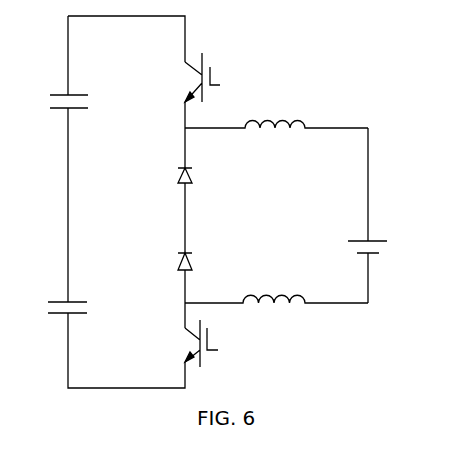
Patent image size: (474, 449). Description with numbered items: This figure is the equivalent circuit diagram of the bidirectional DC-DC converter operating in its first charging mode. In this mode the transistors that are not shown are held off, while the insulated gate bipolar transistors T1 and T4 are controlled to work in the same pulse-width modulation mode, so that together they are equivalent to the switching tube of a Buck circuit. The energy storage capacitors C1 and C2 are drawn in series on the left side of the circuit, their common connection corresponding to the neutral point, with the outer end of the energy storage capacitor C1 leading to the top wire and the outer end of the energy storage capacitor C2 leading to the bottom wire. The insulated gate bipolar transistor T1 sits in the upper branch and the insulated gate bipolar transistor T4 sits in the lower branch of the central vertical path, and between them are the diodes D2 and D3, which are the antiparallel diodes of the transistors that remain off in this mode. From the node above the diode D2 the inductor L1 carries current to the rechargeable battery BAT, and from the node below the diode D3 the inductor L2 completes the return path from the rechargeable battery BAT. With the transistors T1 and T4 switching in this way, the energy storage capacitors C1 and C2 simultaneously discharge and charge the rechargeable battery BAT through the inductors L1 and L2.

The energy storage capacitor C1 is at (54, 102).
The energy storage capacitor C2 is at (52, 309).
The insulated gate bipolar transistor T1 is at (209, 77).
The insulated gate bipolar transistor T4 is at (208, 343).
The diode D2 is at (172, 170).
The diode D3 is at (172, 256).
The inductor L1 is at (276, 113).
The inductor L2 is at (276, 286).
The rechargeable battery BAT is at (386, 215).